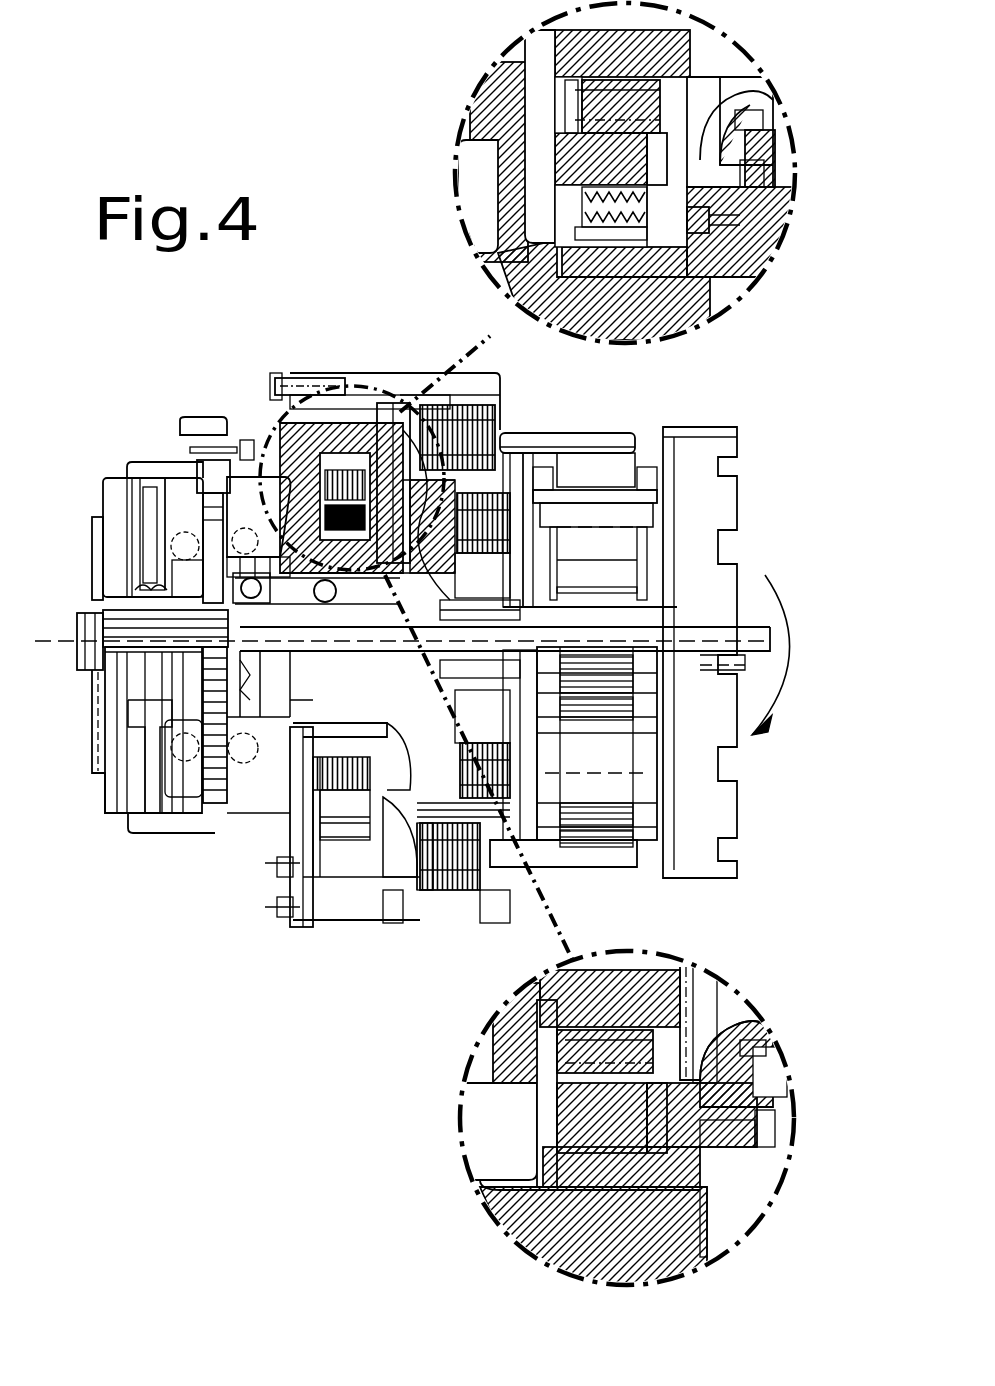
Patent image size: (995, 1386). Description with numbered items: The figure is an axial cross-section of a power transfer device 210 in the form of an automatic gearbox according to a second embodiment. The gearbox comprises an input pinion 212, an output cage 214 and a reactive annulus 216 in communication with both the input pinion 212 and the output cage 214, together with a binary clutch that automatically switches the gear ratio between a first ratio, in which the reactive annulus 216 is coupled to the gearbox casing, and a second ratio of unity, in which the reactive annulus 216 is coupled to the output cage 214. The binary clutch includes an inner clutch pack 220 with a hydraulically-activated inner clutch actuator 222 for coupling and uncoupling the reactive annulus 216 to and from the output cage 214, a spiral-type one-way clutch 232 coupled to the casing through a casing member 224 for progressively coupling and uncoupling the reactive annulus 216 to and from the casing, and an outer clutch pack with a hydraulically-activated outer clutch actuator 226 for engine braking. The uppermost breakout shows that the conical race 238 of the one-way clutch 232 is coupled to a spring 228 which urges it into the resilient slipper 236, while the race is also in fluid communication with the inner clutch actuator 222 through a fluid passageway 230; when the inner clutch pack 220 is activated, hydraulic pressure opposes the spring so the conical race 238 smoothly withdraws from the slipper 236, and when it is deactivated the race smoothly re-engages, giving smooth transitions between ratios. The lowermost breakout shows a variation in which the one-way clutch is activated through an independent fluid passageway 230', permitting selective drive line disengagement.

The power transfer device 210 is at (147, 1120).
The input pinion 212 is at (703, 792).
The output cage 214 is at (648, 486).
The reactive annulus 216 is at (562, 440).
The inner clutch pack 220 is at (513, 460).
The inner clutch actuator 222 is at (523, 553).
The casing member 224 is at (273, 383).
The outer clutch actuator 226 is at (390, 390).
The spring 228 is at (367, 378).
The fluid passageway 230 is at (781, 238).
The independent fluid passageway 230' is at (766, 1045).
The spiral-type one-way clutch 232 is at (278, 457).
The slipper 236 is at (600, 138).
The conical race 238 is at (313, 487).